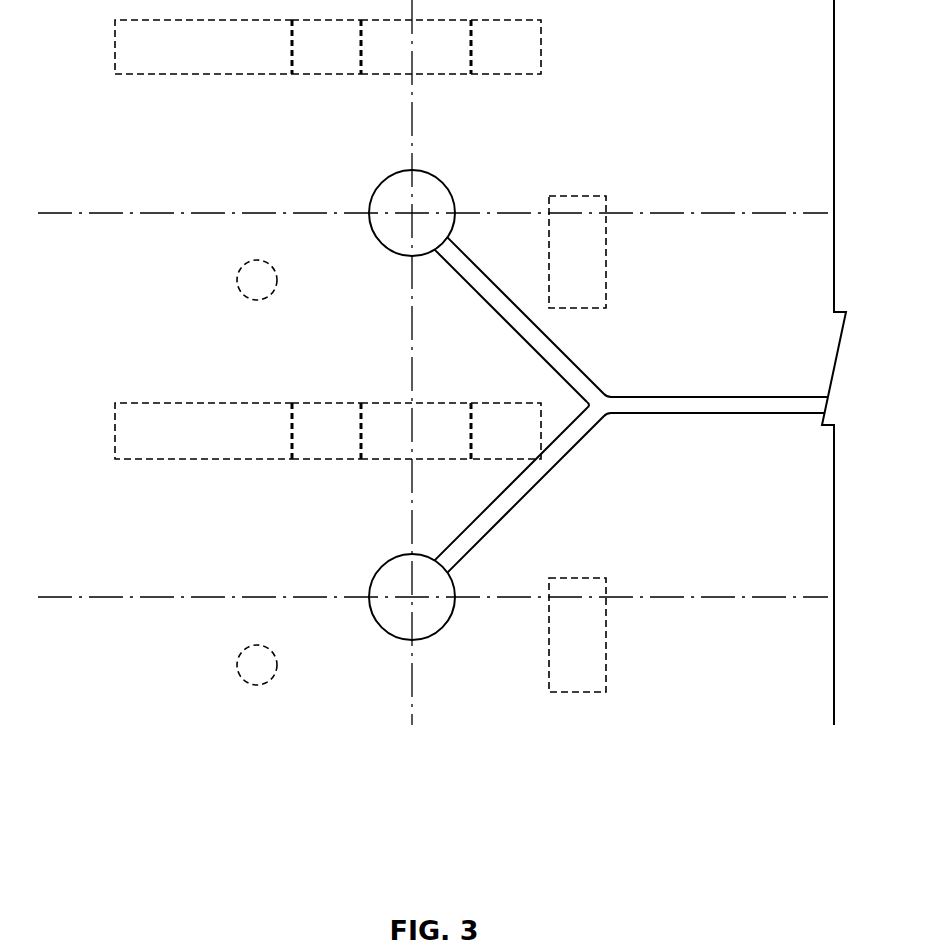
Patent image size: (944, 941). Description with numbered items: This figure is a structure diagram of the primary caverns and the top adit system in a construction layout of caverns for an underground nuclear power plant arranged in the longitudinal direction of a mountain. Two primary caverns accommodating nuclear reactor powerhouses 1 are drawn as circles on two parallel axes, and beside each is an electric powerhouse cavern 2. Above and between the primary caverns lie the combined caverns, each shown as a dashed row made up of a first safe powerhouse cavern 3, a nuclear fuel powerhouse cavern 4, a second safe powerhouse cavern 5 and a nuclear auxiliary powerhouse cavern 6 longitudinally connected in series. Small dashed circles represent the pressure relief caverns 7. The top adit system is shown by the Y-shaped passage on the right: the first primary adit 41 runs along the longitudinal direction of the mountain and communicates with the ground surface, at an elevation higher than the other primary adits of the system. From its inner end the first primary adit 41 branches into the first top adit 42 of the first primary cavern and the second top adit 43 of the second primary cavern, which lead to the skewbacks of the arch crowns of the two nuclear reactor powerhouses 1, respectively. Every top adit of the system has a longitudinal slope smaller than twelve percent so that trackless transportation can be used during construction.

The nuclear reactor powerhouse 1 is at (428, 198).
The electric powerhouse cavern 2 is at (589, 255).
The first safe powerhouse cavern 3 is at (497, 67).
The nuclear fuel powerhouse cavern 4 is at (422, 67).
The second safe powerhouse cavern 5 is at (330, 67).
The nuclear auxiliary powerhouse cavern 6 is at (215, 67).
The pressure relief cavern 7 is at (262, 268).
The first primary adit 41 is at (737, 405).
The first top adit of a first primary cavern 42 is at (578, 378).
The second top adit of a second primary cavern 43 is at (580, 432).